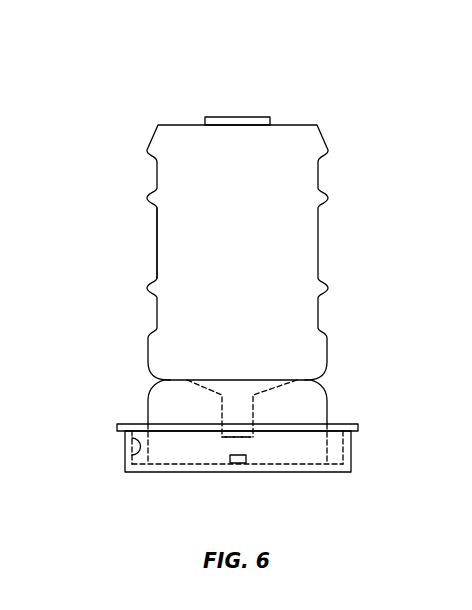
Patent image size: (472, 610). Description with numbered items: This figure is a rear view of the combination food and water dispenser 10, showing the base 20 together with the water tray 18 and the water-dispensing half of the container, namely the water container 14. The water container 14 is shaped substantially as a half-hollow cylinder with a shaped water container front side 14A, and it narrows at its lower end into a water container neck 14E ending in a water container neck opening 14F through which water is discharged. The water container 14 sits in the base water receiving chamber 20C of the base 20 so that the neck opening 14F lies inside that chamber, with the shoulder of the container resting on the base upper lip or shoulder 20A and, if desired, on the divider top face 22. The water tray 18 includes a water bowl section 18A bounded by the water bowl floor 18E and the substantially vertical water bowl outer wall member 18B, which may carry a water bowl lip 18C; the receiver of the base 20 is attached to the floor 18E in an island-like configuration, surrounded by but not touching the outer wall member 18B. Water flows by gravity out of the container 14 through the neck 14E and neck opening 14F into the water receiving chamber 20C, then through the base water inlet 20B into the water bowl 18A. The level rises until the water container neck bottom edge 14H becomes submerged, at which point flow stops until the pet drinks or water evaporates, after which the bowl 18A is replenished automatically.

The combination food and water dispenser 10 is at (261, 282).
The water container 14 is at (321, 243).
The water container front side 14A is at (172, 242).
The water container neck 14E is at (252, 406).
The water container neck opening 14F is at (227, 445).
The water container neck bottom edge 14H is at (247, 440).
The water tray 18 is at (471, 84).
The water bowl section 18A is at (335, 446).
The water bowl outer wall member 18B is at (132, 453).
The water bowl lip 18C is at (358, 430).
The water bowl floor 18E is at (333, 465).
The base 20 is at (156, 386).
The base upper lip or shoulder 20A is at (207, 380).
The base water inlet 20B is at (247, 460).
The base water receiving chamber 20C is at (305, 384).
The divider top face 22 is at (238, 117).